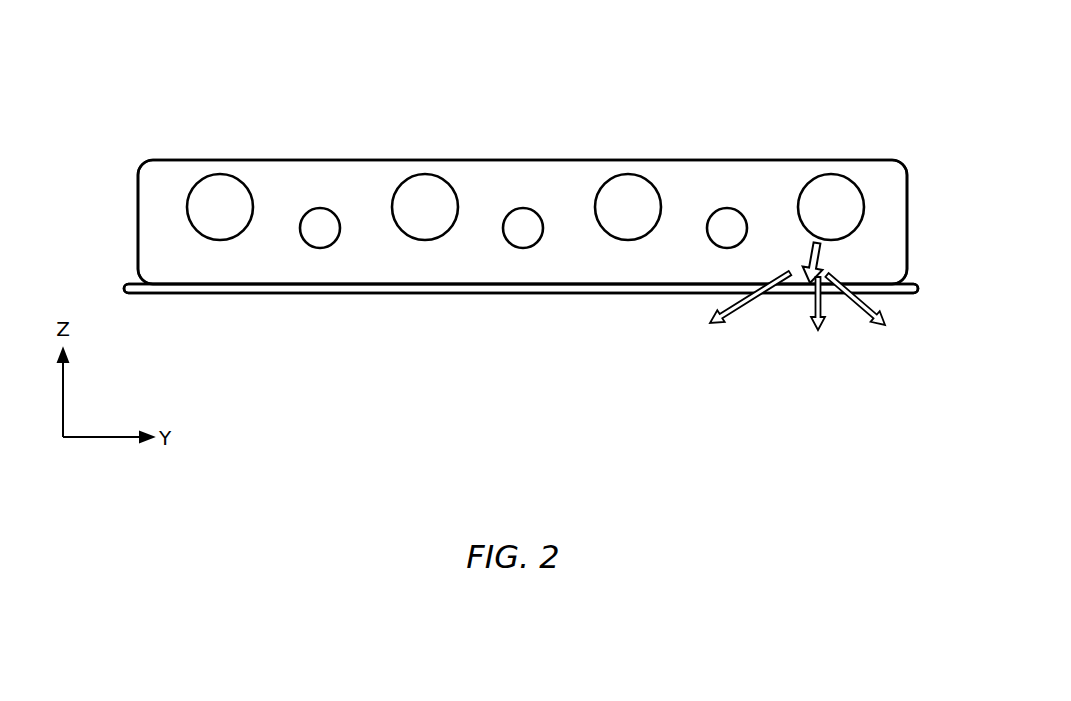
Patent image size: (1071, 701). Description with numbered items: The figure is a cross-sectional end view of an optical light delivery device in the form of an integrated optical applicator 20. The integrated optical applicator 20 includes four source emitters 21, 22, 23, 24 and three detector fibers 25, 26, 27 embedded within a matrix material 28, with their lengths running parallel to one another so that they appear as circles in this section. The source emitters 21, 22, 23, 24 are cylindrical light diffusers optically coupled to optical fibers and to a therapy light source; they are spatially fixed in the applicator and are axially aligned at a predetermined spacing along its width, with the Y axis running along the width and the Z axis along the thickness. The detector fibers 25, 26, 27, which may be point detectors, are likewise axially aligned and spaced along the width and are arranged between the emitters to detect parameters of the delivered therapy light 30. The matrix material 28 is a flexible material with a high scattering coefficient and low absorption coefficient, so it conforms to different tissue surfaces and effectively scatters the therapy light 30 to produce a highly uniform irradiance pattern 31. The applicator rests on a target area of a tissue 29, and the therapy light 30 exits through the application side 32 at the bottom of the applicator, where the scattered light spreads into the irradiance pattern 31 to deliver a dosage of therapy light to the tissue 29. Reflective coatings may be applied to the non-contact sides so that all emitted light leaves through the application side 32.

The integrated optical applicator 20 is at (880, 82).
The source emitter 21 is at (221, 178).
The source emitter 22 is at (425, 178).
The source emitter 23 is at (617, 178).
The source emitter 24 is at (829, 178).
The detector fiber 25 is at (305, 237).
The detector fiber 26 is at (510, 238).
The detector fiber 27 is at (713, 238).
The matrix material 28 is at (885, 248).
The tissue 29 is at (903, 293).
The therapy light 30 is at (802, 284).
The uniform irradiance pattern 31 is at (728, 350).
The application side 32 is at (303, 280).